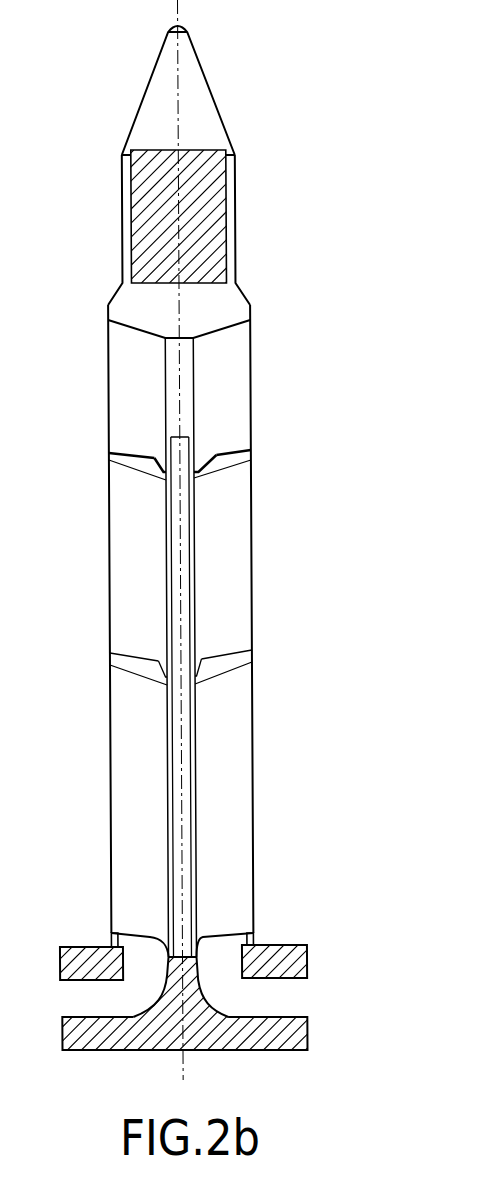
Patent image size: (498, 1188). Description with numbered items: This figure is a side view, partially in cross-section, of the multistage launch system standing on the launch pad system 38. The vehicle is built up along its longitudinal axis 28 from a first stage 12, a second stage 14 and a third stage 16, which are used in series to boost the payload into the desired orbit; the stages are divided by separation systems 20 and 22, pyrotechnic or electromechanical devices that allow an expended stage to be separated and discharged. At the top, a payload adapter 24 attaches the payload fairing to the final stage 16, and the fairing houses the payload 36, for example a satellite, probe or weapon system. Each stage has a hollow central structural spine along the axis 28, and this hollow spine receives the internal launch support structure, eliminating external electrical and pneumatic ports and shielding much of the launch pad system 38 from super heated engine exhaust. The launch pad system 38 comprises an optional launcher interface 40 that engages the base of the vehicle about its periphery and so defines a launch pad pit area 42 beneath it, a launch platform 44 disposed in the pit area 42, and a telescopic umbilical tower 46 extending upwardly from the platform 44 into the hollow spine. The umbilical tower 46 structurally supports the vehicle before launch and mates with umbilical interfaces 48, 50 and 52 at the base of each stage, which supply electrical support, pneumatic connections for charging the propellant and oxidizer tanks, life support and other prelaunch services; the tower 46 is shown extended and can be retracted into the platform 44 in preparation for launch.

The longitudinal axis 28 is at (177, 109).
The payload 36 is at (150, 208).
The payload adapter 24 is at (113, 303).
The third stage 16 is at (108, 393).
The separation system 22 is at (120, 457).
The umbilical interface 52 is at (157, 461).
The telescopic umbilical tower 46 is at (186, 540).
The umbilical interface 48 is at (200, 890).
The second stage 14 is at (110, 630).
The separation system 20 is at (122, 665).
The umbilical interface 50 is at (195, 653).
The first stage 12 is at (110, 768).
The launcher interface 40 is at (115, 942).
The launch pad system 38 is at (322, 986).
The launch pad pit area 42 is at (288, 1010).
The launch platform 44 is at (307, 1030).